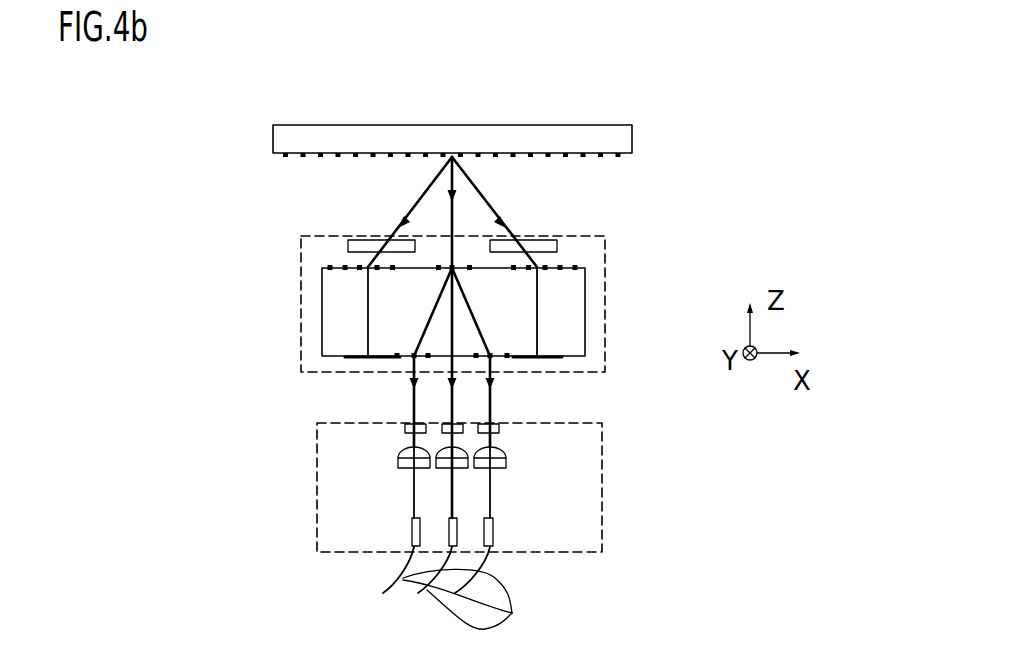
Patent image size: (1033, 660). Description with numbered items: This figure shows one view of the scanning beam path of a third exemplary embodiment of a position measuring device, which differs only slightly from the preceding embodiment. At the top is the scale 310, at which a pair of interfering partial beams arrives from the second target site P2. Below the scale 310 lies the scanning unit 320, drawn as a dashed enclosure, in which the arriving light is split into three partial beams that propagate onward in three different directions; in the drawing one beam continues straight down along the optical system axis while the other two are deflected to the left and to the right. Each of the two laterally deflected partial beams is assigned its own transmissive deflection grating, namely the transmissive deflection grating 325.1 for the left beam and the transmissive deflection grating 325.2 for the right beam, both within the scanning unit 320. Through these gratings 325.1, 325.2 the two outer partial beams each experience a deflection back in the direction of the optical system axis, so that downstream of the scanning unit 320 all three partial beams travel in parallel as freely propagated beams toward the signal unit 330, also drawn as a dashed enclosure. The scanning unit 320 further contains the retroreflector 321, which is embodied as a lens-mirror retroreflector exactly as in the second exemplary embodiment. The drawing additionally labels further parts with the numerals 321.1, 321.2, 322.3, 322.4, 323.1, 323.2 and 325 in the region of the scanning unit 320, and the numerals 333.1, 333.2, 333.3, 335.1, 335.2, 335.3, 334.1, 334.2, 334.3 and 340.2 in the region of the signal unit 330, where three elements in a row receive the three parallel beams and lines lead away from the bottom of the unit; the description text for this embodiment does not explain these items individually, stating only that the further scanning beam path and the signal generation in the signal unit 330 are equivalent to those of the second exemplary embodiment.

The scale 310 is at (645, 139).
The second target site P2 is at (452, 157).
The scanning unit 320 is at (617, 278).
The retroreflector 321 is at (340, 315).
The beam splitter exit face 321.1 is at (347, 358).
The beam splitter exit face 321.2 is at (605, 372).
The beam splitter surface 322.3 is at (328, 267).
The beam splitter surface 322.4 is at (560, 265).
The optical element 323.1 is at (363, 245).
The optical element 323.2 is at (530, 243).
The beam splitter surface 325 is at (438, 265).
The transmissive deflection grating 325.1 is at (404, 354).
The transmissive deflection grating 325.2 is at (493, 355).
The signal unit 330 is at (610, 502).
The aperture / filter 333.1 is at (407, 431).
The aperture / filter 333.2 is at (447, 427).
The aperture / filter 333.3 is at (493, 428).
The lens 335.1 is at (406, 462).
The lens 335.2 is at (445, 465).
The lens 335.3 is at (488, 461).
The detector 334.1 is at (412, 527).
The detector 334.2 is at (457, 525).
The detector 334.3 is at (488, 528).
The signal lines 340.2 is at (485, 589).